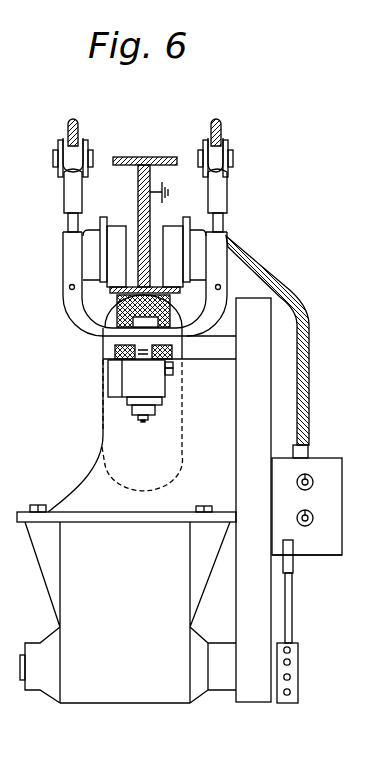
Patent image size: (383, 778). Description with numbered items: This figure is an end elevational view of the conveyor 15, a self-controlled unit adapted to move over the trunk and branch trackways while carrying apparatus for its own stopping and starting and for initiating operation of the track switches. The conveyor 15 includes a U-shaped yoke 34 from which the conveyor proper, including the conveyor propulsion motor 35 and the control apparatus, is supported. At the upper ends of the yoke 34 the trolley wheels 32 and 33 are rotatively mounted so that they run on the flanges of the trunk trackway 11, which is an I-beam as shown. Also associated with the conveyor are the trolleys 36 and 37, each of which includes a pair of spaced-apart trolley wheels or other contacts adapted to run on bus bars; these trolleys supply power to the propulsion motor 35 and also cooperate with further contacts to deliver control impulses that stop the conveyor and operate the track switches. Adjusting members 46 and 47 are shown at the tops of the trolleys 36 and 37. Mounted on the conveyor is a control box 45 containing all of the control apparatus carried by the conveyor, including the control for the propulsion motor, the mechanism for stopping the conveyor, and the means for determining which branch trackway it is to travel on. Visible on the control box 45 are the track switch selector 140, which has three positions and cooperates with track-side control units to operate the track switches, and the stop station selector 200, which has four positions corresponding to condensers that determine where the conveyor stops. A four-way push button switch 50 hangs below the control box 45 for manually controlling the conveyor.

The trunk trackway 11 is at (150, 157).
The conveyor 15 is at (61, 498).
The trolley wheel 32 is at (113, 226).
The trolley wheel 33 is at (170, 226).
The U-shaped yoke 34 is at (72, 332).
The conveyor propulsion motor 35 is at (48, 698).
The trolley 36 is at (59, 177).
The trolley 37 is at (232, 181).
The control box 45 is at (327, 557).
The adjusting knob 46 is at (216, 118).
The adjusting knob 47 is at (73, 118).
The four-way push button switch 50 is at (298, 677).
The track switch selector 140 is at (322, 524).
The stop station selector 200 is at (318, 470).